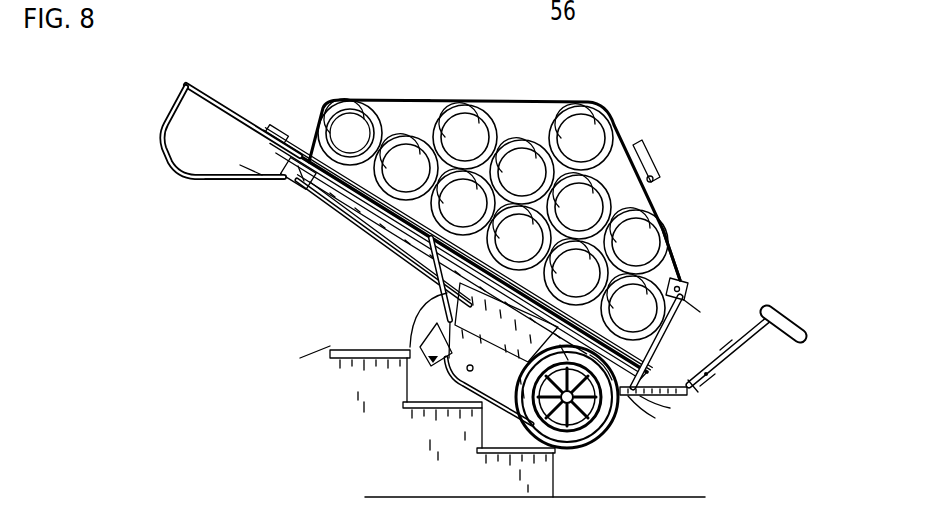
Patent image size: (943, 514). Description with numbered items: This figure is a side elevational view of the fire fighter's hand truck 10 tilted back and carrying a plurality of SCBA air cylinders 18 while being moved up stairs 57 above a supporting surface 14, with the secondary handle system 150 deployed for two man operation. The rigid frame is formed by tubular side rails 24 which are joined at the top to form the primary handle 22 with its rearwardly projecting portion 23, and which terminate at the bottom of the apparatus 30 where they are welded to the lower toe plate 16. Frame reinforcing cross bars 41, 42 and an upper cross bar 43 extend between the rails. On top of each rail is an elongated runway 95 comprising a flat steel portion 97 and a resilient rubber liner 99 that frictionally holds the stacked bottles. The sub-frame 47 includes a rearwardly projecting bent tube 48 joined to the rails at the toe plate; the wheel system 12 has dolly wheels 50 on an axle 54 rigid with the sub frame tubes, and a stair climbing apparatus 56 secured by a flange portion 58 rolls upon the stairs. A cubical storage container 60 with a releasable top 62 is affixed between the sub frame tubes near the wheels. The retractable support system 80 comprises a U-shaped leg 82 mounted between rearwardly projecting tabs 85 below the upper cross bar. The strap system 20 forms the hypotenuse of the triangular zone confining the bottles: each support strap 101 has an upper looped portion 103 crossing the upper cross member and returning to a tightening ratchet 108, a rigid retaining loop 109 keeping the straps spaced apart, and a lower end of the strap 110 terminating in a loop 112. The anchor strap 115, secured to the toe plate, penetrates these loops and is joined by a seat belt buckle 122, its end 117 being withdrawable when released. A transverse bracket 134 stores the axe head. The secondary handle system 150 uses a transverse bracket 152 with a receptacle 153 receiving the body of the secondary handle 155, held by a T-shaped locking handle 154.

The fire fighter's hand truck 10 is at (794, 104).
The wheel system 12 is at (640, 432).
The supporting surface 14 is at (708, 496).
The lower toe plate 16 is at (697, 345).
The SCBA air cylinders 18 is at (460, 112).
The strap system 20 is at (563, 92).
The upper primary handle 22 is at (191, 70).
The rearwardly projecting portion 23 is at (165, 160).
The frame side rail 24 is at (274, 126).
The bottom of the apparatus 30 is at (718, 342).
The cross bar 41 is at (506, 340).
The cross bar 42 is at (388, 261).
The upper cross bar 43 is at (288, 190).
The sub-frame 47 is at (398, 309).
The sub frame tube 48 is at (395, 363).
The dolly wheel 50 is at (564, 447).
The axle 54 is at (584, 437).
The stair climbing apparatus 56 is at (514, 443).
The stairs 57 is at (322, 346).
The flange portion 58 is at (482, 414).
The storage container 60 is at (430, 390).
The releasable top 62 is at (416, 362).
The retractable support system 80 is at (300, 232).
The U-shaped leg 82 is at (340, 222).
The rearwardly projecting tabs 85 is at (300, 196).
The runway 95 is at (298, 130).
The flat steel portion 97 is at (252, 168).
The resilient rubber liner 99 is at (266, 120).
The support strap 101 is at (403, 86).
The upper looped portion 103 is at (337, 132).
The tightening ratchet 108 is at (661, 147).
The rigid retaining loop 109 is at (260, 178).
The lower end of the strap 110 is at (680, 245).
The loop 112 is at (681, 278).
The anchor strap 115 is at (742, 256).
The end of anchor strap 117 is at (708, 280).
The seat belt buckle 122 is at (690, 286).
The transverse bracket 134 is at (556, 352).
The secondary handle system 150 is at (806, 318).
The transverse bracket 152 is at (633, 395).
The receptacle 153 is at (645, 398).
The T-shaped locking handle 154 is at (710, 378).
The body of the secondary handle 155 is at (700, 394).